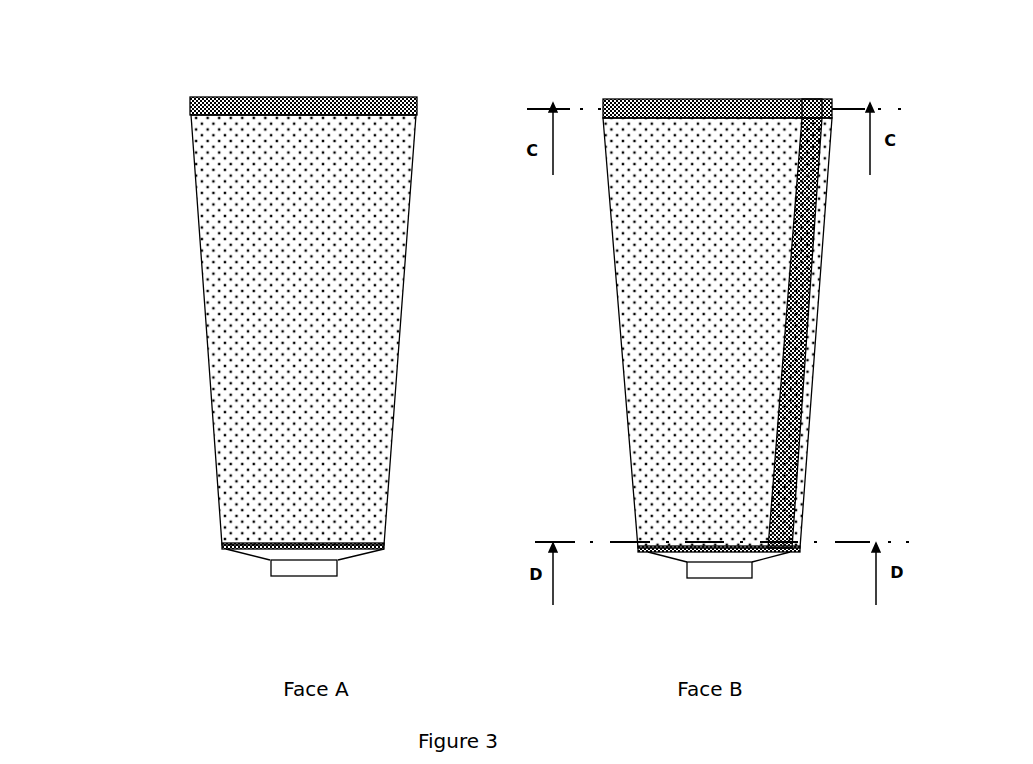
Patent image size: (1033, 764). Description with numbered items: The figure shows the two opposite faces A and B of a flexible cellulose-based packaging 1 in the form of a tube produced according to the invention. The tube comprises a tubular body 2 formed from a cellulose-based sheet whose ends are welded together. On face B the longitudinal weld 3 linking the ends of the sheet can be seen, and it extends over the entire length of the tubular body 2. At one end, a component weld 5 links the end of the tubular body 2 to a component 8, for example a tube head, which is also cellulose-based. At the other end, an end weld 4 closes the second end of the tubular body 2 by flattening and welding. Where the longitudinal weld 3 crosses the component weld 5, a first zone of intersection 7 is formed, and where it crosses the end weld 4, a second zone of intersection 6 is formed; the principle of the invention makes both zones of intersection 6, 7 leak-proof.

The cellulose-based packaging 1 is at (240, 330).
The tubular body 2 is at (232, 422).
The longitudinal weld 3 is at (800, 465).
The end weld 4 is at (287, 99).
The component weld 5 is at (233, 547).
The zone of intersection of the longitudinal weld and of the end weld 6 is at (813, 100).
The zone of intersection of the longitudinal weld and of the component weld 7 is at (780, 553).
The component 8 is at (345, 550).